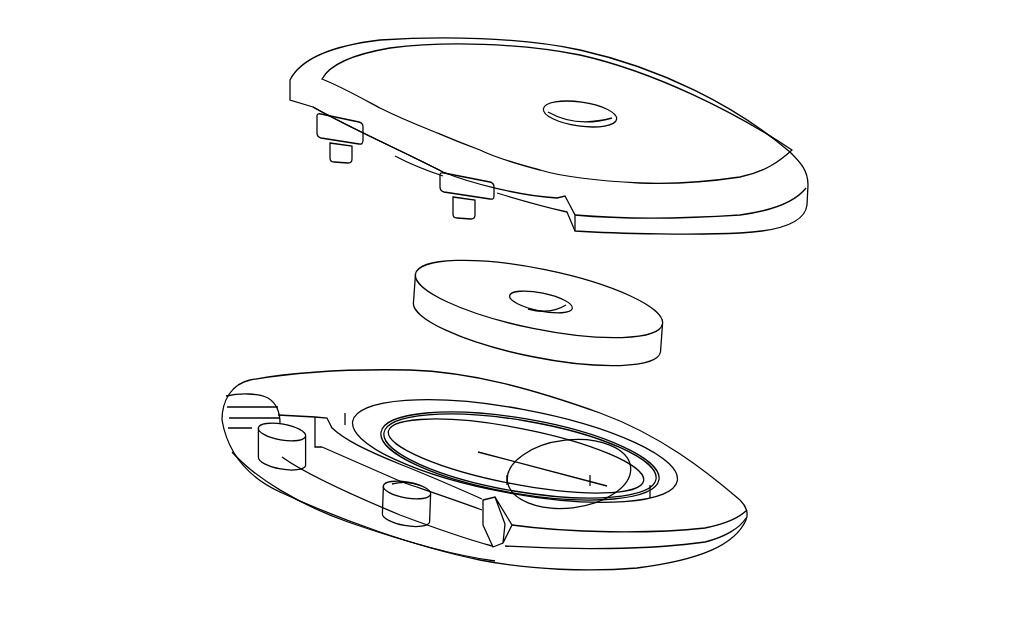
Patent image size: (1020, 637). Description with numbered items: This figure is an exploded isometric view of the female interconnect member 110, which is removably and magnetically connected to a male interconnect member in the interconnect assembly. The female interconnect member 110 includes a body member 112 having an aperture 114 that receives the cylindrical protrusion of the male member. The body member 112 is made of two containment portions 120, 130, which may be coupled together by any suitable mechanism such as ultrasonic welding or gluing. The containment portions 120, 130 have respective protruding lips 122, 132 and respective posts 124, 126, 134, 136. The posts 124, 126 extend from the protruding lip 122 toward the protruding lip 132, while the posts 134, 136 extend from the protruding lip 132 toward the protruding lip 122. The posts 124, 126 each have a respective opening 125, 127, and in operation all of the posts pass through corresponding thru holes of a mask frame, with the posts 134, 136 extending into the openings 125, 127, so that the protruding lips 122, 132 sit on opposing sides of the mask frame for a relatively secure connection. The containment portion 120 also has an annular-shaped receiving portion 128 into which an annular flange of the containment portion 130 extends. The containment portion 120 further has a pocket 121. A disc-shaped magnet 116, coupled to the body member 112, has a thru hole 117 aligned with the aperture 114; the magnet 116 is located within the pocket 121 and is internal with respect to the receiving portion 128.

The female interconnect member 110 is at (148, 123).
The body member 112 is at (258, 115).
The aperture 114 is at (580, 120).
The disc-shaped magnet 116 is at (679, 320).
The thru hole 117 is at (546, 304).
The containment portion 120 is at (292, 369).
The pocket 121 is at (648, 440).
The protruding lip 122 is at (327, 493).
The post 124 is at (399, 526).
The opening 125 is at (410, 486).
The post 126 is at (264, 461).
The opening 127 is at (234, 392).
The annular-shaped receiving portion 128 is at (363, 440).
The containment portion 130 is at (746, 103).
The protruding lip 132 is at (388, 148).
The post 134 is at (436, 220).
The post 136 is at (316, 164).